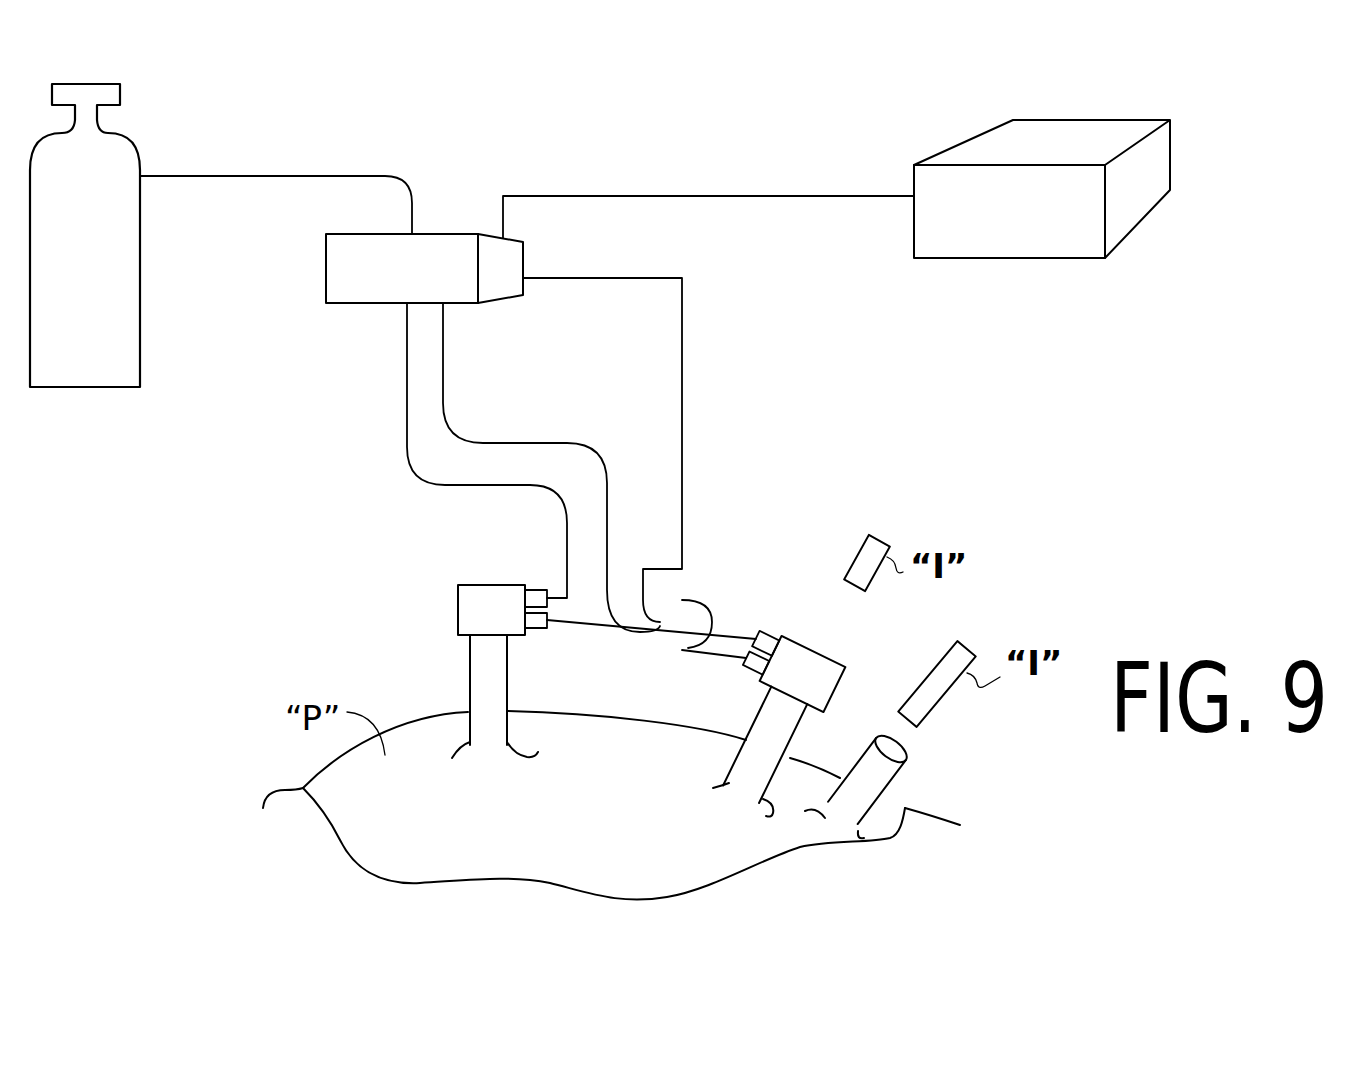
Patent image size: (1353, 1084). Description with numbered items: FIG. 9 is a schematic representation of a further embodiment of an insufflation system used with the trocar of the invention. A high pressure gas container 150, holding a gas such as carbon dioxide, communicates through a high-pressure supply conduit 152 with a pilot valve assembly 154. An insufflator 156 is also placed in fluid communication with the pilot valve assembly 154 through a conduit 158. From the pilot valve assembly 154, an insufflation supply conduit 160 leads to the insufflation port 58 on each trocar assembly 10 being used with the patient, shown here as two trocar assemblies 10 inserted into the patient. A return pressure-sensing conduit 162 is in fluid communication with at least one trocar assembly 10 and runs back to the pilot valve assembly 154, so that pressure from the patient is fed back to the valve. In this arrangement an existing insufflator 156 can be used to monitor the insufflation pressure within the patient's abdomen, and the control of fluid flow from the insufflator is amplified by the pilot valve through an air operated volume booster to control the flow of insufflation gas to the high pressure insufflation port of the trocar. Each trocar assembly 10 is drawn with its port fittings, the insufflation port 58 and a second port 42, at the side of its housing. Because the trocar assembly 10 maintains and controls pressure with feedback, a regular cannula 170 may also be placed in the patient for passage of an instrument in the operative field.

The trocar assembly 10 is at (465, 607).
The gas port 42 is at (537, 630).
The insufflation port 58 is at (540, 590).
The high pressure gas container 150 is at (140, 267).
The high-pressure supply conduit 152 is at (310, 172).
The pilot valve assembly 154 is at (430, 242).
The insufflator 156 is at (1017, 227).
The conduit 158 is at (744, 196).
The insufflation supply conduit 160 is at (405, 405).
The return pressure-sensing conduit 162 is at (682, 472).
The regular cannula 170 is at (907, 767).